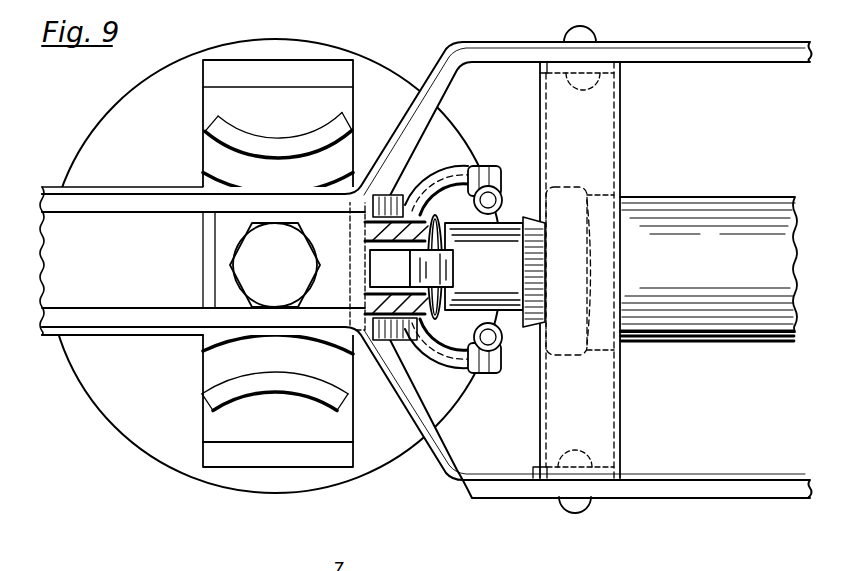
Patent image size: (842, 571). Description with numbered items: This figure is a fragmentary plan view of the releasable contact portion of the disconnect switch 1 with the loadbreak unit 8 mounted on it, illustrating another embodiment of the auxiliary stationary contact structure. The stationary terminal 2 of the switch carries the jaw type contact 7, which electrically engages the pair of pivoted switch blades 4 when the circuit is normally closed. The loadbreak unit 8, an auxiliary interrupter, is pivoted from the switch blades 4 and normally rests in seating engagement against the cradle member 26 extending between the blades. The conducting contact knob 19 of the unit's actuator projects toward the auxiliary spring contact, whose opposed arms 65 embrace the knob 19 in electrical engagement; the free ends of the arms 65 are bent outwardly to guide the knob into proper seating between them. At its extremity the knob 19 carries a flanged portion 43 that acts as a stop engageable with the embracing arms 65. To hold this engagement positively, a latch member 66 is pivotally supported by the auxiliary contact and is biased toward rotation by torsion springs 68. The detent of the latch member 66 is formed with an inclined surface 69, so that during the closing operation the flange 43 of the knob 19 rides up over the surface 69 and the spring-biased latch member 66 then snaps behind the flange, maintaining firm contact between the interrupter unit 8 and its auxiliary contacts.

The disconnect switch 1 is at (670, 508).
The stationary terminal 2 is at (137, 295).
The switch blades 4 is at (732, 57).
The jaw type contact 7 is at (220, 125).
The loadbreak unit 8 is at (733, 360).
The contact knob 19 is at (495, 272).
The cradle member 26 is at (603, 430).
The flanged portion 43 is at (459, 358).
The opposed arms 65 is at (468, 180).
The latch member 66 is at (380, 267).
The torsion springs 68 is at (367, 230).
The inclined surface 69 is at (440, 266).